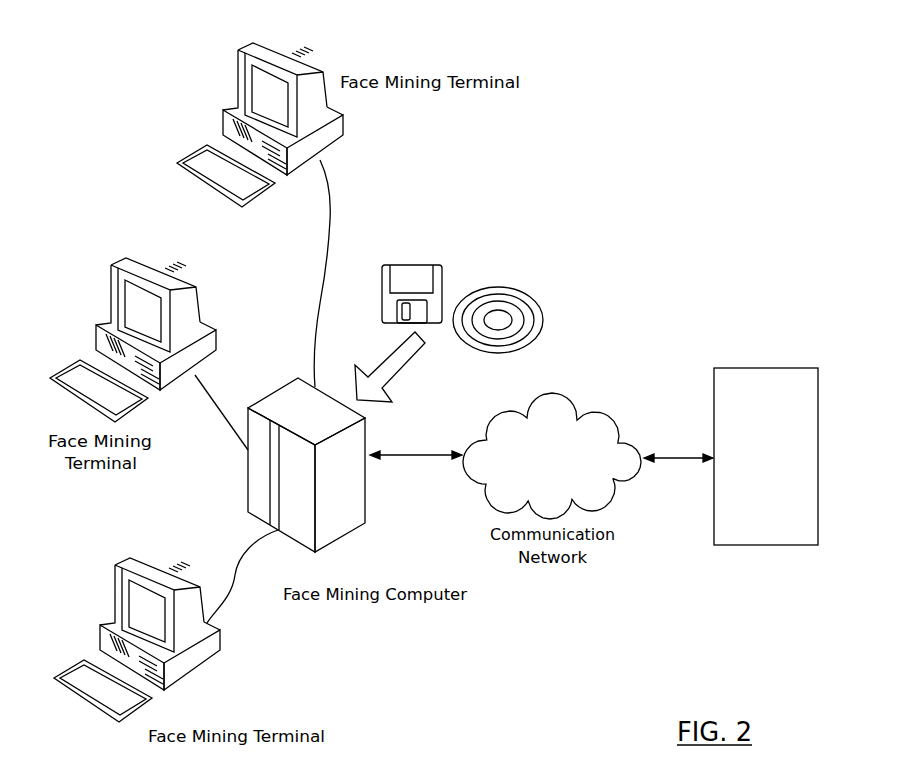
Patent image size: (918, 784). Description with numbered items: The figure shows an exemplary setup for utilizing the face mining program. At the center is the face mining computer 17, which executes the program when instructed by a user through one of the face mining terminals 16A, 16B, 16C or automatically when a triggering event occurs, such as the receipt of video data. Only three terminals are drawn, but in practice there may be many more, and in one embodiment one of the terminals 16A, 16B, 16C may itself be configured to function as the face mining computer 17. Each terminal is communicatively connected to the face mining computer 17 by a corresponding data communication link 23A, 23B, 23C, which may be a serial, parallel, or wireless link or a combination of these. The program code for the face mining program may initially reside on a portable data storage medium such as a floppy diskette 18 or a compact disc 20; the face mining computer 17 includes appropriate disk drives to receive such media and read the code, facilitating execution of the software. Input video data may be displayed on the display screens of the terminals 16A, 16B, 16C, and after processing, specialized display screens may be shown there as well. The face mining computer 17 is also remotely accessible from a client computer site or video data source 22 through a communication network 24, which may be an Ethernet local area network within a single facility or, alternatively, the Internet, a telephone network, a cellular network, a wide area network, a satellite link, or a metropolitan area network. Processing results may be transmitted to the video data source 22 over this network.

The face mining terminal 16A is at (235, 83).
The face mining terminal 16B is at (142, 262).
The face mining terminal 16C is at (200, 675).
The face mining computer 17 is at (330, 497).
The floppy diskette 18 is at (412, 263).
The compact disc 20 is at (513, 287).
The video data source 22 is at (762, 368).
The data communication link 23A is at (332, 190).
The data communication link 23B is at (220, 405).
The data communication link 23C is at (235, 575).
The communication network 24 is at (565, 467).